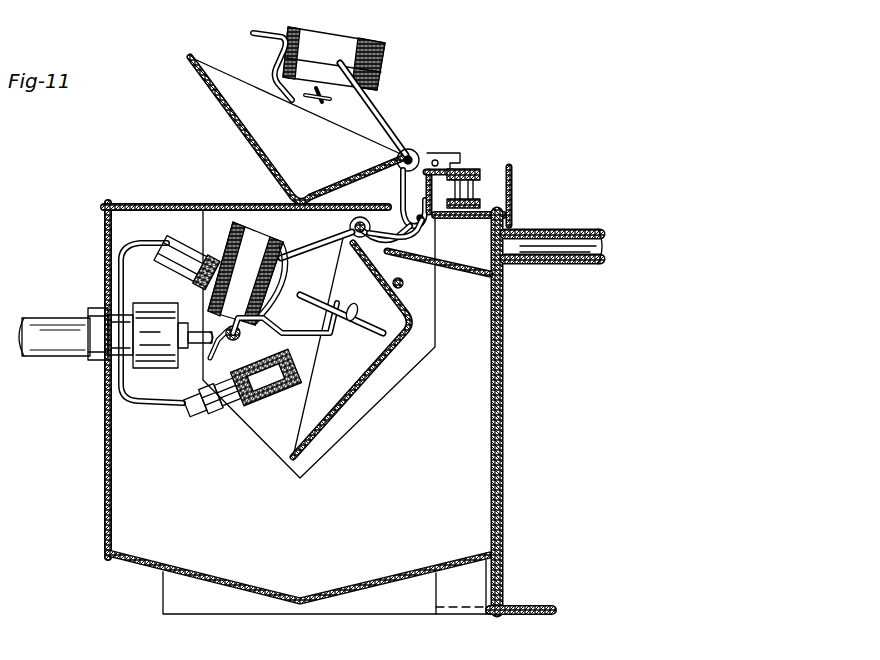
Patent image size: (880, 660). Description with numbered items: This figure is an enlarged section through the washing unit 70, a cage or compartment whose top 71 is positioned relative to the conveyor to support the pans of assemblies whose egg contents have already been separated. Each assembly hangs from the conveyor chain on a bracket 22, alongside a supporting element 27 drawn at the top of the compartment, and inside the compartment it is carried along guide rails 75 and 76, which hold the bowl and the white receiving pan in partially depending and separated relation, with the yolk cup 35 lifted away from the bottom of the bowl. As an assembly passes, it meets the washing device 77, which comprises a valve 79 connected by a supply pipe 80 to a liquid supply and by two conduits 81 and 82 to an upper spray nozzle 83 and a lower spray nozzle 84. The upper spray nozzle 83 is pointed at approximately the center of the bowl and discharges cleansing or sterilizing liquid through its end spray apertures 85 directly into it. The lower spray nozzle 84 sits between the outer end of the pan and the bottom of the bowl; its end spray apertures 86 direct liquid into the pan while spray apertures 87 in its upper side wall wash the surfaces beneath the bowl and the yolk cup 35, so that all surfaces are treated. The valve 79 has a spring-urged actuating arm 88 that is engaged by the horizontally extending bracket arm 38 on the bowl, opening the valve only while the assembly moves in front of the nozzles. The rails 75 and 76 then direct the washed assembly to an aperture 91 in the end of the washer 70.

The bracket 22 is at (437, 222).
The bracket 27 is at (452, 150).
The yolk cup 35 is at (283, 268).
The outer end member or arm 38 is at (210, 356).
The washing unit 70 is at (104, 436).
The top 71 is at (143, 205).
The guide rail 75 is at (403, 285).
The guide rail 76 is at (233, 341).
The washing device 77 is at (160, 304).
The valve 79 is at (146, 371).
The supply pipe 80 is at (46, 318).
The conduit 81 is at (140, 248).
The conduit 82 is at (136, 405).
The upper spray nozzle 83 is at (186, 248).
The lower spray nozzle 84 is at (255, 402).
The end spray apertures 85 is at (205, 270).
The spray apertures 86 is at (306, 330).
The spray apertures 87 is at (265, 360).
The actuating arm 88 is at (190, 325).
The aperture 91 is at (398, 384).